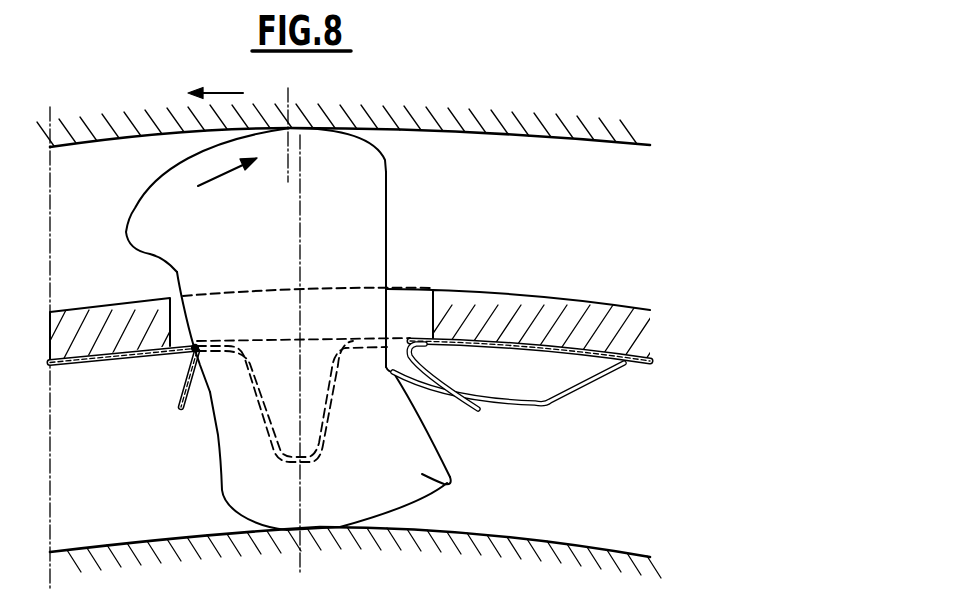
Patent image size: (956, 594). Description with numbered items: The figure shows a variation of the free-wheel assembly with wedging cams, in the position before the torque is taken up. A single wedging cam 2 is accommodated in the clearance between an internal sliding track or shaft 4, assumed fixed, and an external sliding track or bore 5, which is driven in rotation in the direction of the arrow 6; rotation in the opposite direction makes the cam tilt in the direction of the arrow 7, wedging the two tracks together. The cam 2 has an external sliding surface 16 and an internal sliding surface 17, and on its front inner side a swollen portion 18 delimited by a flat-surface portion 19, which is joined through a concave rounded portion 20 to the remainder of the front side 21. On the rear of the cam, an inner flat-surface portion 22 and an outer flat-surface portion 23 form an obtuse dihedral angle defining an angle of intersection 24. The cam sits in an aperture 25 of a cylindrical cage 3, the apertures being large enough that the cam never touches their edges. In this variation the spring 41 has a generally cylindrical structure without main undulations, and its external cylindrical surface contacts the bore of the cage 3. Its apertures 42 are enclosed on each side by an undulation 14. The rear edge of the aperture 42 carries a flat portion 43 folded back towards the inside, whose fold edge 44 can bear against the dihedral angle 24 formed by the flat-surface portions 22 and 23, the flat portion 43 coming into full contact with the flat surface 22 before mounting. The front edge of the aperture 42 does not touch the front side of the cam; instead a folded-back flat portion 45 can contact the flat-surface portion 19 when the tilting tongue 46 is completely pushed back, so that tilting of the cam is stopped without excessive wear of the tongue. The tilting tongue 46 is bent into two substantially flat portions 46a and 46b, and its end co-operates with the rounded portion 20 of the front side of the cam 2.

The wedging cam 2 is at (290, 329).
The cylindrical cage 3 is at (90, 303).
The shaft 4 is at (514, 536).
The bore 5 is at (468, 133).
The arrow 6 is at (215, 84).
The arrow 7 is at (227, 172).
The undulation 14 is at (287, 459).
The external sliding surface 16 is at (140, 199).
The internal sliding surface 17 is at (428, 497).
The swollen portion 18 is at (449, 479).
The flat-surface portion 19 is at (428, 429).
The concave rounded portion 20 is at (386, 364).
The front side 21 is at (389, 205).
The flat-surface portion 22 is at (214, 432).
The flat-surface portion 23 is at (177, 274).
The angle of intersection 24 is at (210, 387).
The apertures 25 is at (398, 305).
The spring 41 is at (105, 374).
The apertures 42 is at (403, 336).
The flat portion 43 is at (181, 405).
The edge of the fold 44 is at (196, 346).
The flat portion 45 is at (431, 376).
The tilting tongue 46 is at (508, 393).
The flat portion 46a is at (447, 397).
The flat portion 46b is at (580, 385).